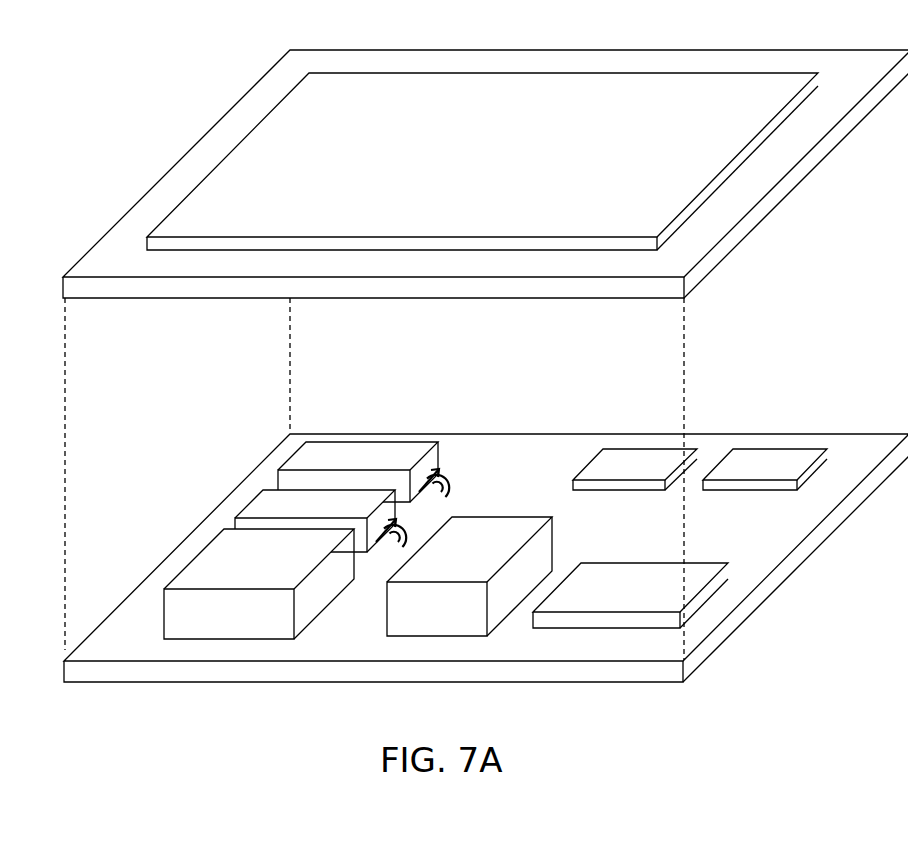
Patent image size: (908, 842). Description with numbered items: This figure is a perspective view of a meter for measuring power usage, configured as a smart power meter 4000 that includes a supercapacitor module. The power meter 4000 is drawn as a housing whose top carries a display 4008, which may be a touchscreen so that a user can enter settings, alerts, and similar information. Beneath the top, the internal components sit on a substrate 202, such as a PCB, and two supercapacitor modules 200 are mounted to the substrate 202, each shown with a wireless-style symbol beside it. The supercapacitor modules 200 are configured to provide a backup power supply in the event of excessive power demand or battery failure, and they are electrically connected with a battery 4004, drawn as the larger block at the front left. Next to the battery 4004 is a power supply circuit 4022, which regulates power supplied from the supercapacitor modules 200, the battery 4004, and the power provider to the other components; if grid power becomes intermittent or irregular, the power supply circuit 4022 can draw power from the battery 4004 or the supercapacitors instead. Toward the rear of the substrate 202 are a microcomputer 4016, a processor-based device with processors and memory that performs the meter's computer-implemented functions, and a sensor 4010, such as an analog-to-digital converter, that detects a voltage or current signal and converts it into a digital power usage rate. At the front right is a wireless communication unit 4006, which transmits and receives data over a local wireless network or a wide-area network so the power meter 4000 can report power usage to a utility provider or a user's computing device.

The power meter 4000 is at (128, 61).
The display 4008 is at (205, 177).
The substrate 202 is at (476, 434).
The battery 4004 is at (195, 557).
The supercapacitor module 200 is at (287, 456).
The power supply circuit 4022 is at (420, 637).
The microcomputer 4016 is at (647, 449).
The sensor 4010 is at (780, 449).
The wireless communication unit 4006 is at (595, 629).